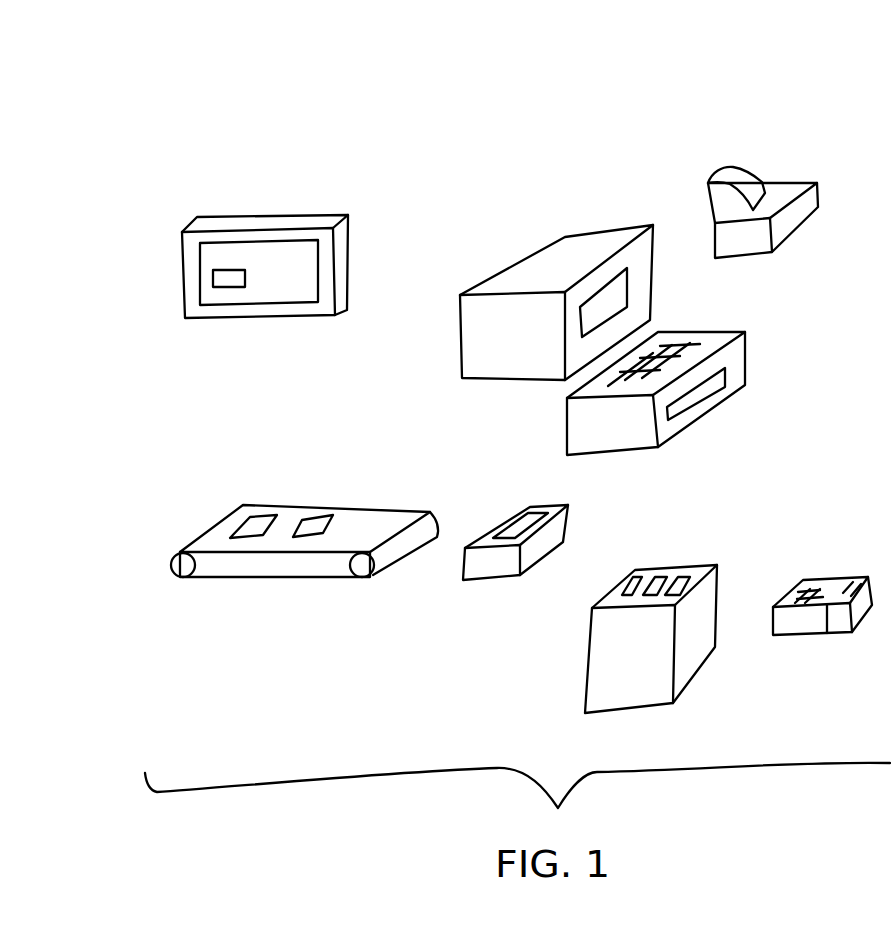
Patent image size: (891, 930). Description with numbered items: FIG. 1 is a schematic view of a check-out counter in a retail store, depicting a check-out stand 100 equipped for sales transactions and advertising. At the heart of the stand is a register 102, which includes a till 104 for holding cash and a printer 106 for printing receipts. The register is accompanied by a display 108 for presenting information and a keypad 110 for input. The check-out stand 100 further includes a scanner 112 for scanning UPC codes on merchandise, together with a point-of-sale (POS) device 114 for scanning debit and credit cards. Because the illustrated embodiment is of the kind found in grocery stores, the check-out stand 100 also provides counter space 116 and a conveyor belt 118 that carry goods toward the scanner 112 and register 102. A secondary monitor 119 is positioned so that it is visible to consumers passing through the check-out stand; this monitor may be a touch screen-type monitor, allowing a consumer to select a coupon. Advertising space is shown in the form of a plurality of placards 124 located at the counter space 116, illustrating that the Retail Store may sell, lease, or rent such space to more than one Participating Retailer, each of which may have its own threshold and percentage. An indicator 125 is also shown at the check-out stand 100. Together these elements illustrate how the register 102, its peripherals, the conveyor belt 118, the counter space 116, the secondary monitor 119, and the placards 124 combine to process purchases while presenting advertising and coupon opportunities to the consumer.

The check-out stand 100 is at (335, 131).
The register 102 is at (522, 218).
The till 104 is at (748, 344).
The printer 106 is at (818, 193).
The display 108 is at (462, 352).
The keypad 110 is at (683, 343).
The scanner 112 is at (482, 567).
The point-of-sale (POS) device 114 is at (802, 645).
The counter space 116 is at (687, 673).
The conveyor belt 118 is at (337, 577).
The secondary monitor 119 is at (188, 198).
The placards 124 is at (310, 535).
The indicator 125 is at (220, 278).